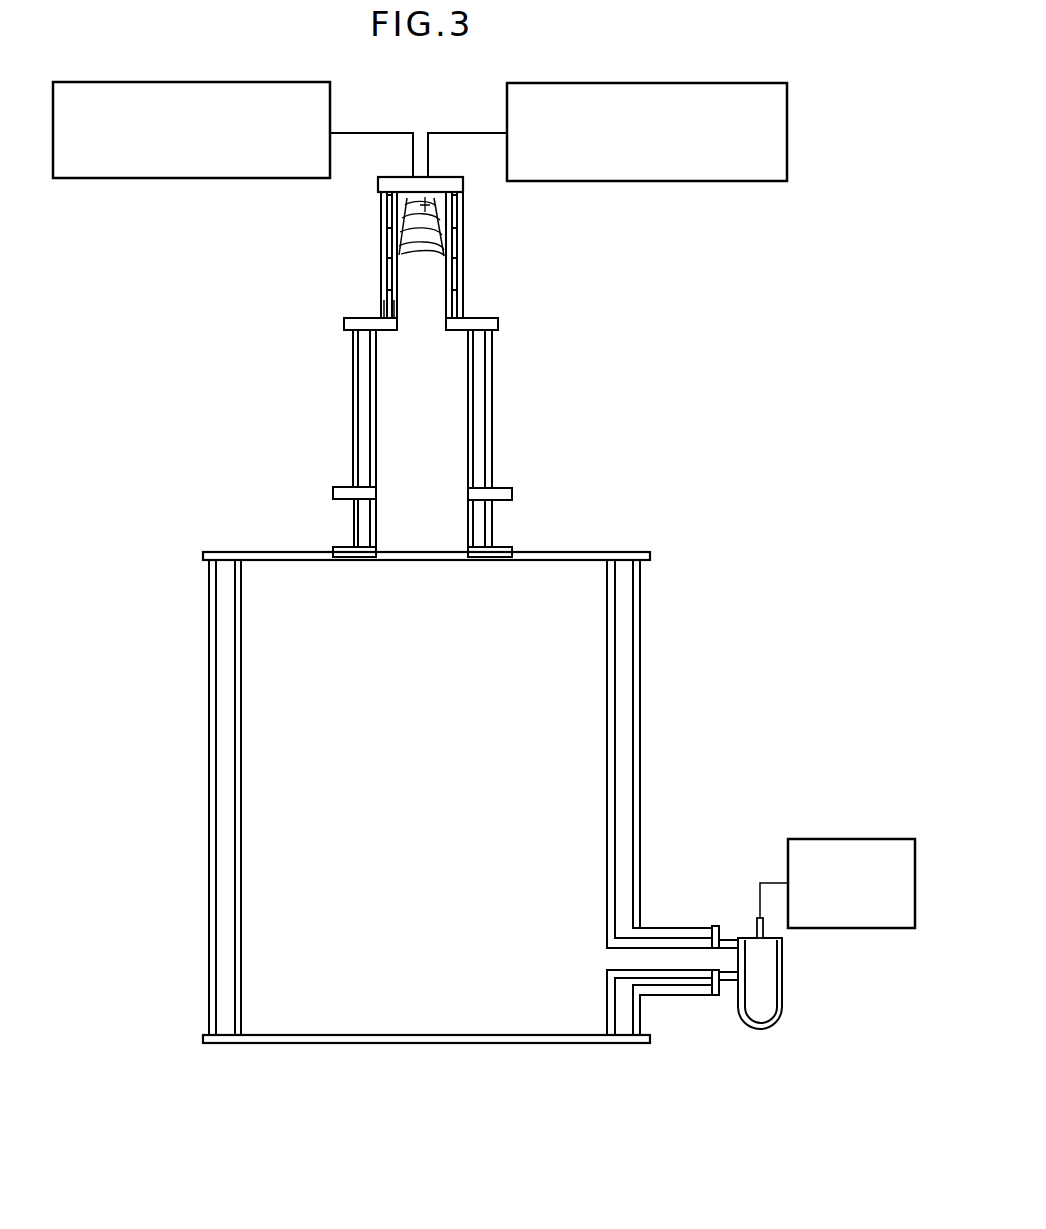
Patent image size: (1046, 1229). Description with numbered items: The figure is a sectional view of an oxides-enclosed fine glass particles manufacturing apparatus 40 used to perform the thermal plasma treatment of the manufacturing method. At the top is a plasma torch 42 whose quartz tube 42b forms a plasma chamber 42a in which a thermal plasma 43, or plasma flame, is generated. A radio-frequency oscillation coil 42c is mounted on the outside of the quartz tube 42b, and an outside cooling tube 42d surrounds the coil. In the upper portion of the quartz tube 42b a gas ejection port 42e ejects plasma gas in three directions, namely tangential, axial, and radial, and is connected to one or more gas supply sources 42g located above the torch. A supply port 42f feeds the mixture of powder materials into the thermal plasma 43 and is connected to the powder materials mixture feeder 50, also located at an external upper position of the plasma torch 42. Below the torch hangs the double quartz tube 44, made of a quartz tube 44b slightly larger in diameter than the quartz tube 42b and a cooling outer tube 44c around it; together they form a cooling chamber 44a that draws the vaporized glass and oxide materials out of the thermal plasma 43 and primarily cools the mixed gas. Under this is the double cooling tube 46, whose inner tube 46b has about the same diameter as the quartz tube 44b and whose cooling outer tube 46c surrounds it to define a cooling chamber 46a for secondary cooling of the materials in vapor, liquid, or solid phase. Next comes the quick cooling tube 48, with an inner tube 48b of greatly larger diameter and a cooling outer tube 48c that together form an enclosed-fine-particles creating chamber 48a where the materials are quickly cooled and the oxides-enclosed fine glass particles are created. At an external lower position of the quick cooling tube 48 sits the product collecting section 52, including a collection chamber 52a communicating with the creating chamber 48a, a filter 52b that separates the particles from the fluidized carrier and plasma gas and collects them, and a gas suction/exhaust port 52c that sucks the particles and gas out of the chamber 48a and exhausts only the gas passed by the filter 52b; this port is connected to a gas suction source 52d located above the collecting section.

The oxides-enclosed fine glass particles manufacturing apparatus 40 is at (780, 290).
The plasma torch 42 is at (578, 253).
The plasma chamber 42a is at (420, 288).
The quartz tube 42b is at (448, 277).
The radio-frequency oscillation coil 42c is at (389, 234).
The outside cooling tube 42d is at (383, 305).
The gas ejection port 42e is at (448, 202).
The supply port 42f is at (398, 199).
The gas supply source 42g is at (787, 143).
The thermal plasma 43 is at (443, 237).
The double quartz tube 44 is at (593, 395).
The cooling chamber 44a is at (437, 358).
The quartz tube 44b is at (470, 430).
The cooling outer tube 44c is at (355, 405).
The double cooling tube 46 is at (600, 520).
The cooling chamber 46a is at (437, 514).
The inner tube 46b is at (475, 525).
The cooling outer tube 46c is at (355, 526).
The quick cooling tube 48 is at (663, 686).
The enclosed-fine-particles creating chamber 48a is at (446, 804).
The inner tube 48b is at (614, 614).
The cooling outer tube 48c is at (210, 718).
The powder materials mixture feeder 50 is at (218, 180).
The product collecting section 52 is at (795, 828).
The collection chamber 52a is at (768, 975).
The filter 52b is at (782, 1012).
The gas suction/exhaust port 52c is at (757, 930).
The gas suction source 52d is at (847, 840).